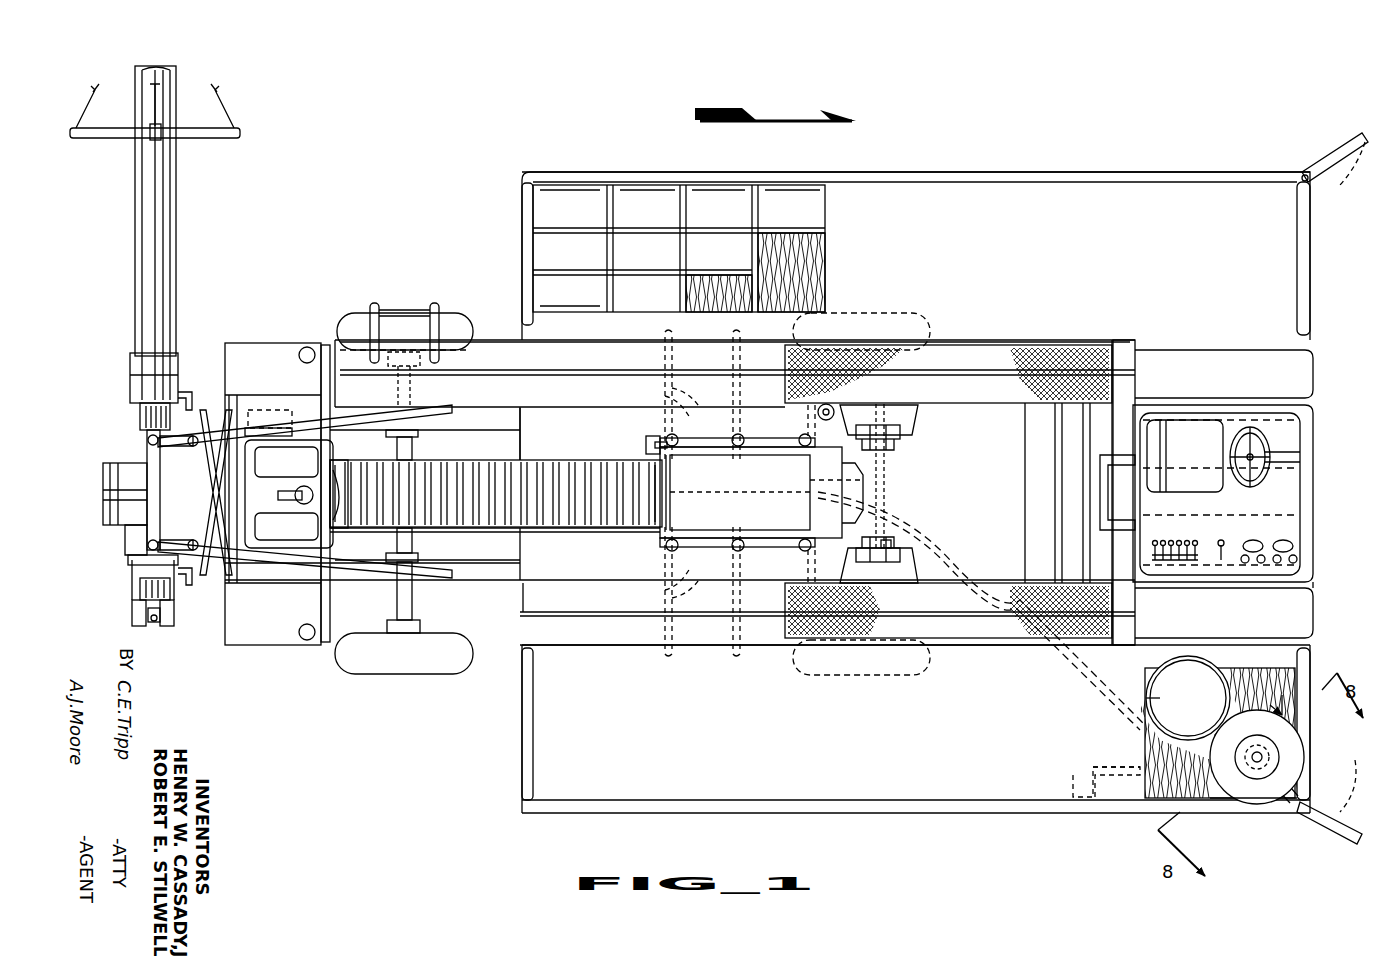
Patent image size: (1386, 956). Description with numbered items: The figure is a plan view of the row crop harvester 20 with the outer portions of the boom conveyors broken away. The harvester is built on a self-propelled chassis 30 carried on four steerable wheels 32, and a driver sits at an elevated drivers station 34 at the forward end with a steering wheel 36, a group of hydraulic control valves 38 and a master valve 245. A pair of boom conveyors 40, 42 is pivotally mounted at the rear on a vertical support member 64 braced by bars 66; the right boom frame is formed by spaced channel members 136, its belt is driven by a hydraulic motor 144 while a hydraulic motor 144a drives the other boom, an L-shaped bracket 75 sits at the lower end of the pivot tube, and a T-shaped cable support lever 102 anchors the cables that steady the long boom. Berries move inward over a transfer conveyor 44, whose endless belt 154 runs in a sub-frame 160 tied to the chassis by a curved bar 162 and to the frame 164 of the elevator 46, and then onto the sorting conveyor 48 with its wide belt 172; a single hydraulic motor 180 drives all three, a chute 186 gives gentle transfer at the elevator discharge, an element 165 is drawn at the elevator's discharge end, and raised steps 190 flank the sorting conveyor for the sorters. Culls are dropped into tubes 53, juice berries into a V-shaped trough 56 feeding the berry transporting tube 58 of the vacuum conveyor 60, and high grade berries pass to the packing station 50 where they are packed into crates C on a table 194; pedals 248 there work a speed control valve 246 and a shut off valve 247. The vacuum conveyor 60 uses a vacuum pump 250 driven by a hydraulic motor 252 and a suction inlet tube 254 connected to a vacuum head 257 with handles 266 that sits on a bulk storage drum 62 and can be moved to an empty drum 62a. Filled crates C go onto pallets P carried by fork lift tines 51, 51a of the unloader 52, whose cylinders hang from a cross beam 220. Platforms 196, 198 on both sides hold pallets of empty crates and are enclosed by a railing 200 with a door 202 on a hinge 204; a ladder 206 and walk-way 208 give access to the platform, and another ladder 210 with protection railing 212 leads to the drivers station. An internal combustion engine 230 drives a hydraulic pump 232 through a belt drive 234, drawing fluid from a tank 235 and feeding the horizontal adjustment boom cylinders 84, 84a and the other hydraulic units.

The row crop harvester 20 is at (978, 126).
The boom conveyor 40 is at (184, 189).
The transfer conveyor 44 is at (118, 466).
The curved bar 162 is at (112, 491).
The endless conveyor belt 154 is at (172, 490).
The sub-frame 160 is at (125, 528).
The support member 64 is at (150, 543).
The bars 66 is at (360, 416).
The tank 235 is at (268, 342).
The belt drive 234 is at (246, 416).
The hydraulic pump 232 is at (272, 424).
The hydraulic motor 144a is at (208, 386).
The hydraulic motor 144 is at (193, 578).
The L-shaped fabricated bracket 75 is at (148, 581).
The channel members 136 is at (135, 610).
The cable support lever 102 is at (150, 620).
The boom conveyor 42 is at (162, 628).
The horizontal adjustment boom cylinder 84 is at (240, 468).
The horizontal adjustment boom cylinder 84a is at (240, 533).
The internal combustion engine 230 is at (350, 476).
The ladder 206 is at (392, 302).
The wheels 32 is at (462, 318).
The chassis 30 is at (492, 580).
The walk-way 208 is at (735, 369).
The raised steps or platforms 190 is at (548, 406).
The elevator 46 is at (435, 466).
The elevator frame 164 is at (430, 526).
The conveyor end 165 is at (578, 526).
The sorting conveyor 48 is at (688, 516).
The hydraulic motor 180 is at (645, 444).
The V-shaped trough 56 is at (786, 452).
The chute 186 is at (666, 472).
The endless belt 172 is at (740, 491).
The tubes 53 is at (740, 400).
The packing station 50 is at (938, 402).
The speed control valve 246 is at (835, 408).
The pedals 248 is at (893, 438).
The shut off valve 247 is at (893, 544).
The berry transporting tube 58 is at (893, 490).
The table 194 is at (1033, 492).
The ladder 210 is at (1100, 472).
The protection railing 212 is at (1155, 400).
The platform 196 is at (916, 256).
The railing 200 is at (1040, 170).
The door 202 is at (1312, 223).
The hinge 204 is at (1302, 176).
The crates C is at (700, 196).
The pallets P is at (822, 248).
The unloader 52 is at (1312, 352).
The fork lift tines 51a is at (1312, 418).
The drivers station 34 is at (1205, 416).
The steering wheel 36 is at (1258, 426).
The hydraulic control valves 38 is at (1190, 538).
The master valve 245 is at (1223, 538).
The cross beam 220 is at (1128, 612).
The fork lift tines 51 is at (1312, 600).
The platform 198 is at (916, 729).
The vacuum head 257 is at (1238, 670).
The handles 266 is at (1222, 730).
The suction inlet tube 254 is at (1270, 750).
The vacuum conveyor 60 is at (1285, 690).
The empty drum 62a is at (1145, 696).
The bulk storage drum 62 is at (1237, 798).
The vacuum pump 250 is at (1125, 765).
The hydraulic motor 252 is at (1070, 776).